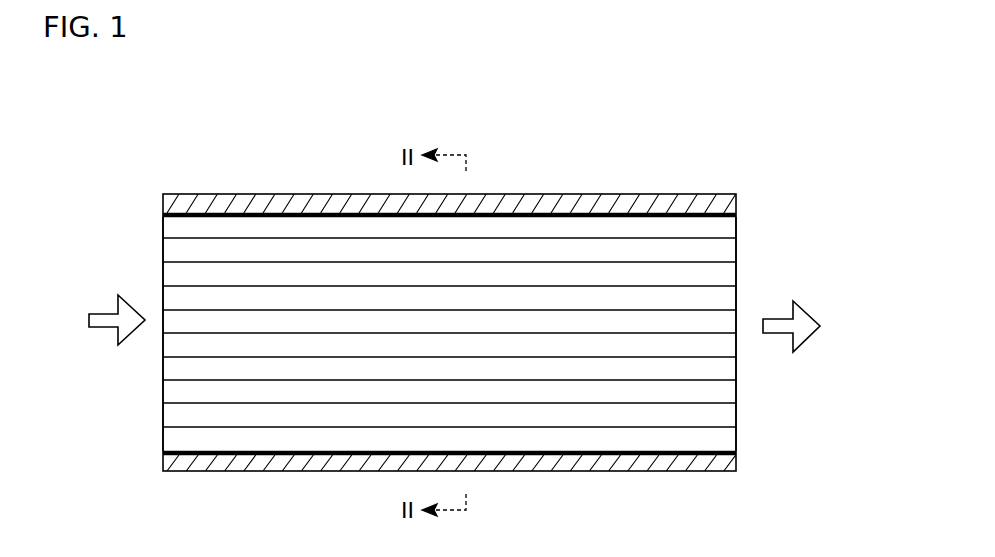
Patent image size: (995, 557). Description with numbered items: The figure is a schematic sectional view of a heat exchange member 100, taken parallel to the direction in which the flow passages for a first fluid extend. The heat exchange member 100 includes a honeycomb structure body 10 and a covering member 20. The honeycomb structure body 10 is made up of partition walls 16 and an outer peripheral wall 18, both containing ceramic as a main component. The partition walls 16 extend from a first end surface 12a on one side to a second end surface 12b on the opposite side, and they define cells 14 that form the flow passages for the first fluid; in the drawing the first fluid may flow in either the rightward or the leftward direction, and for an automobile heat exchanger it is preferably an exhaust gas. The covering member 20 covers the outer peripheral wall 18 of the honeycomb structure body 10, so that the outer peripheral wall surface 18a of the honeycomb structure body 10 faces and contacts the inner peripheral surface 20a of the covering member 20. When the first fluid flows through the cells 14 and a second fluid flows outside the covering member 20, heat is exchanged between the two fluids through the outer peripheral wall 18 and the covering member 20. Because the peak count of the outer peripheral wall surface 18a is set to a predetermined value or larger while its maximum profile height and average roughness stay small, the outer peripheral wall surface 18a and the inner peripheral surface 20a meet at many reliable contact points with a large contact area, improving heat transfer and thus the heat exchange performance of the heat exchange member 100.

The heat exchange member 100 is at (762, 128).
The honeycomb structure body 10 is at (740, 411).
The first end surface 12a is at (162, 250).
The second end surface 12b is at (737, 250).
The cells 14 is at (510, 248).
The partition walls 16 is at (547, 248).
The outer peripheral wall 18 is at (262, 212).
The outer peripheral wall surface 18a is at (222, 212).
The covering member 20 is at (598, 201).
The inner peripheral surface 20a is at (634, 211).